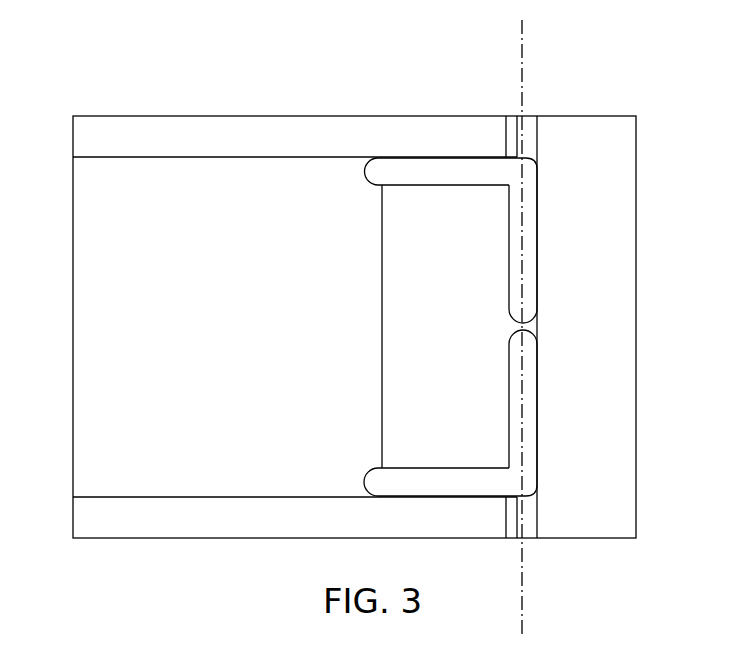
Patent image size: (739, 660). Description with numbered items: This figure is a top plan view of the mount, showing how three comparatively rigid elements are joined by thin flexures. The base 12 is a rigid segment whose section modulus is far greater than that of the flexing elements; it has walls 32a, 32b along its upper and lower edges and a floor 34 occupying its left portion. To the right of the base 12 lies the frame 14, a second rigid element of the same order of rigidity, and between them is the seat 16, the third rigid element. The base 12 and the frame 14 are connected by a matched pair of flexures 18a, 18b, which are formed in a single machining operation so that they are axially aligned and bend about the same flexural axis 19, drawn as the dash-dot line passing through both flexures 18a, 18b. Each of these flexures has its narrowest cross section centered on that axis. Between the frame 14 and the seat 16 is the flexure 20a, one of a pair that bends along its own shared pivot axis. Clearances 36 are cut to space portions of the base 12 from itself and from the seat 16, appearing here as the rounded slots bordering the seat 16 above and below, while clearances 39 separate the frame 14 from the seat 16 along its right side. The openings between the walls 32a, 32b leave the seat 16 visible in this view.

The base 12 is at (164, 106).
The frame 14 is at (599, 395).
The seat 16 is at (454, 350).
The flexure 18a is at (523, 541).
The flexure 18b is at (524, 123).
The flexural axis 19 is at (522, 38).
The flexure 20a is at (522, 327).
The wall 32a is at (273, 528).
The wall 32b is at (273, 152).
The floor 34 is at (263, 343).
The clearance 36 is at (437, 175).
The clearance 39 is at (537, 212).